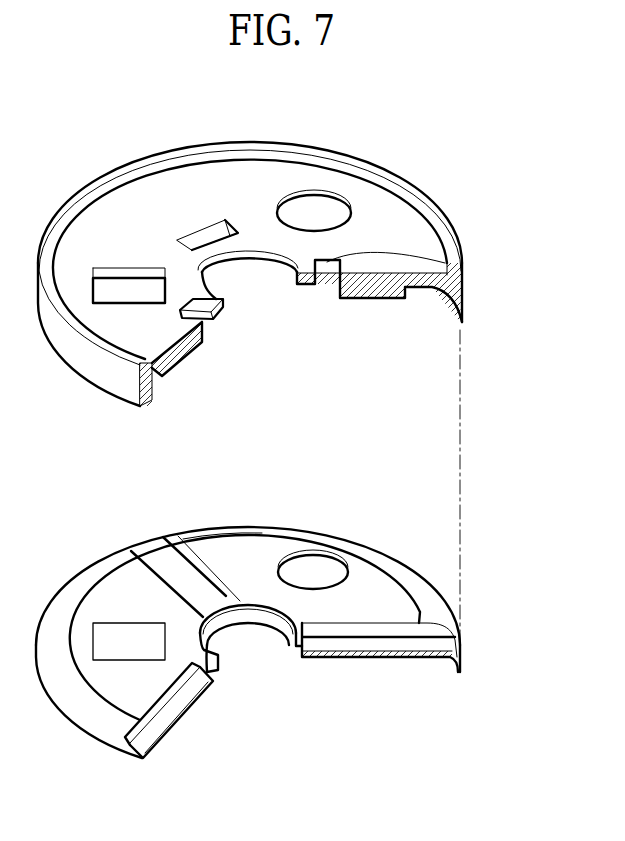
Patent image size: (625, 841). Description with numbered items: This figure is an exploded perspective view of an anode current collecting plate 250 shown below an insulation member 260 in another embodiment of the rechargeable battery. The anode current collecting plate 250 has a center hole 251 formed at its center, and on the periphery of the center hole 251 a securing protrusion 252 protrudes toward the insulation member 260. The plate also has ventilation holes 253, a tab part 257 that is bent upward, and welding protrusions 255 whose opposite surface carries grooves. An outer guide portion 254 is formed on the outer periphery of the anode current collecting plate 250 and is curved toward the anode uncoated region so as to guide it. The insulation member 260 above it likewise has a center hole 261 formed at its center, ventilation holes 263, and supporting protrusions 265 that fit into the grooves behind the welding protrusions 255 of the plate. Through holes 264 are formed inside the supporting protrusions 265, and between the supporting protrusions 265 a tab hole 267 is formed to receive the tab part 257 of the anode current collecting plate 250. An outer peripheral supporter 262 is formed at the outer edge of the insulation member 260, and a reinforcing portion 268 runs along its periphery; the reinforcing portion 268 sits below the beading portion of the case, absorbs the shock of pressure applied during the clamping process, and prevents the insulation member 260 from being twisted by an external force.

The anode current collecting plate 250 is at (441, 593).
The center hole 251 is at (258, 664).
The securing protrusion 252 is at (222, 617).
The ventilation holes 253 is at (320, 553).
The outer guide portion 254 is at (462, 647).
The welding protrusions 255 is at (193, 710).
The tab part 257 is at (123, 627).
The insulation member 260 is at (426, 191).
The center hole 261 is at (254, 262).
The outer peripheral supporter 262 is at (445, 300).
The ventilation holes 263 is at (327, 190).
The through holes 264 is at (447, 265).
The supporting protrusions 265 is at (367, 300).
The tab hole 267 is at (122, 268).
The reinforcing portion 268 is at (175, 152).